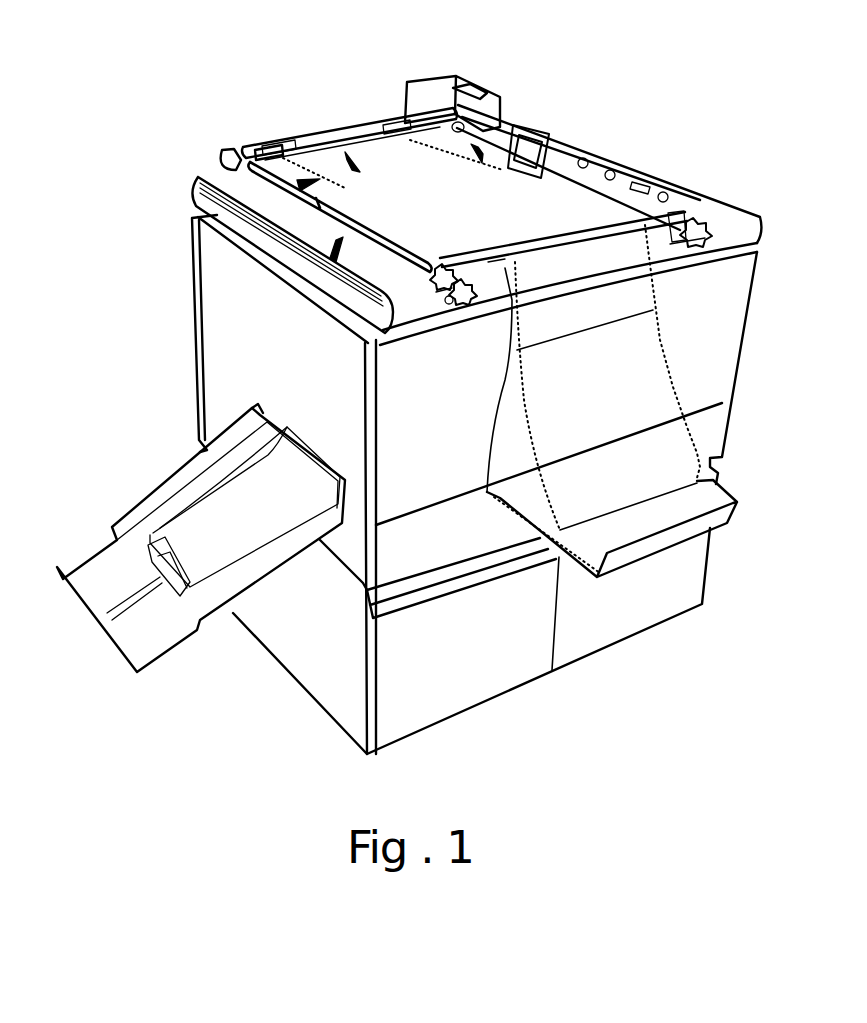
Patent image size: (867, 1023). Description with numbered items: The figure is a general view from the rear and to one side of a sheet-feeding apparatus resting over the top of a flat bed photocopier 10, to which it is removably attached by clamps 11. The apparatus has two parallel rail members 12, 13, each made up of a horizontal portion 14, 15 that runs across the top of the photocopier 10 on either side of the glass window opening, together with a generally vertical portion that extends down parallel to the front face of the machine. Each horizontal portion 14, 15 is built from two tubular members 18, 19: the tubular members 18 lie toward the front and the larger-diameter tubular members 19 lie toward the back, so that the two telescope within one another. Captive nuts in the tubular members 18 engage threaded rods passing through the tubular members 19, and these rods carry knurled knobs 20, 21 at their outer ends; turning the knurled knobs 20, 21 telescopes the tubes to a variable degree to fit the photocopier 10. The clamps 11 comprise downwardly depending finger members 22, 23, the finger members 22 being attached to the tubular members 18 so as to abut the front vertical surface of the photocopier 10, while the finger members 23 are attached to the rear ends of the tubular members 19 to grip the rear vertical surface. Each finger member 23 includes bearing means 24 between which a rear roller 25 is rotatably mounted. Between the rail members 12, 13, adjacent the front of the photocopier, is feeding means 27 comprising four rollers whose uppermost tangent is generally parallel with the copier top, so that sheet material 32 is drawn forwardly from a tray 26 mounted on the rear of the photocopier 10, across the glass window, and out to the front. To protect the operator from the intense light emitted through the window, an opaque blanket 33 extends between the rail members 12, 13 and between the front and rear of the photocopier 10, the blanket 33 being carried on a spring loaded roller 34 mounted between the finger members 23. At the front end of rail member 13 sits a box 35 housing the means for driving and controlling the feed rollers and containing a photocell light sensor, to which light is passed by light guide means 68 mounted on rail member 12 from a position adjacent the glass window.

The flat bed photocopier 10 is at (697, 363).
The clamps 11 is at (228, 152).
The rail member 12 is at (473, 143).
The rail member 13 is at (343, 285).
The horizontal portion 14 is at (522, 135).
The horizontal portion 15 is at (245, 178).
The tubular member 18 is at (325, 200).
The tubular member 19 is at (390, 243).
The knurled knob 20 is at (450, 265).
The knurled knob 21 is at (703, 214).
The finger member 22 is at (443, 293).
The finger member 23 is at (682, 242).
The bearing means 24 is at (447, 302).
The rear roller 25 is at (493, 268).
The tray 26 is at (632, 553).
The feeding means 27 is at (343, 142).
The sheet material 32 is at (280, 163).
The opaque blanket 33 is at (380, 140).
The spring loaded roller 34 is at (565, 238).
The box 35 is at (437, 80).
The light guide means 68 is at (563, 140).